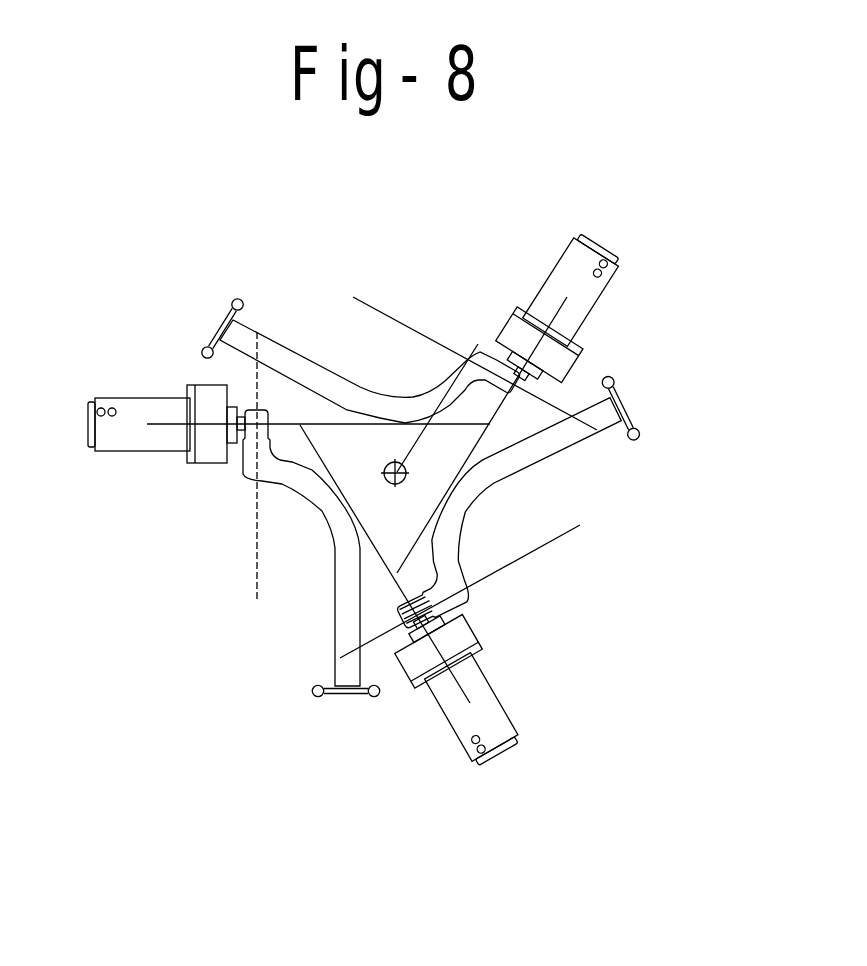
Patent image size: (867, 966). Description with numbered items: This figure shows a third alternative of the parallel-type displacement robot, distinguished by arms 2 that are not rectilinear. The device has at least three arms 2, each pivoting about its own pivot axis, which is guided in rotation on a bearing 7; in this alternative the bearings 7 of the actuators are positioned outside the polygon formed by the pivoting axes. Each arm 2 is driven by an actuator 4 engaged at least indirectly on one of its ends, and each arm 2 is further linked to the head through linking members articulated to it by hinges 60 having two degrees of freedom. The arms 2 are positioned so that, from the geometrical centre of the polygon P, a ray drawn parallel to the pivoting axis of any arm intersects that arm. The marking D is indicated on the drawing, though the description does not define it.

The arm 2 is at (347, 627).
The actuator 4 is at (113, 433).
The bearing 7 is at (231, 430).
The hinge 60 is at (318, 697).
The geometrical centre of the polygon P is at (360, 453).
The distance D is at (478, 344).